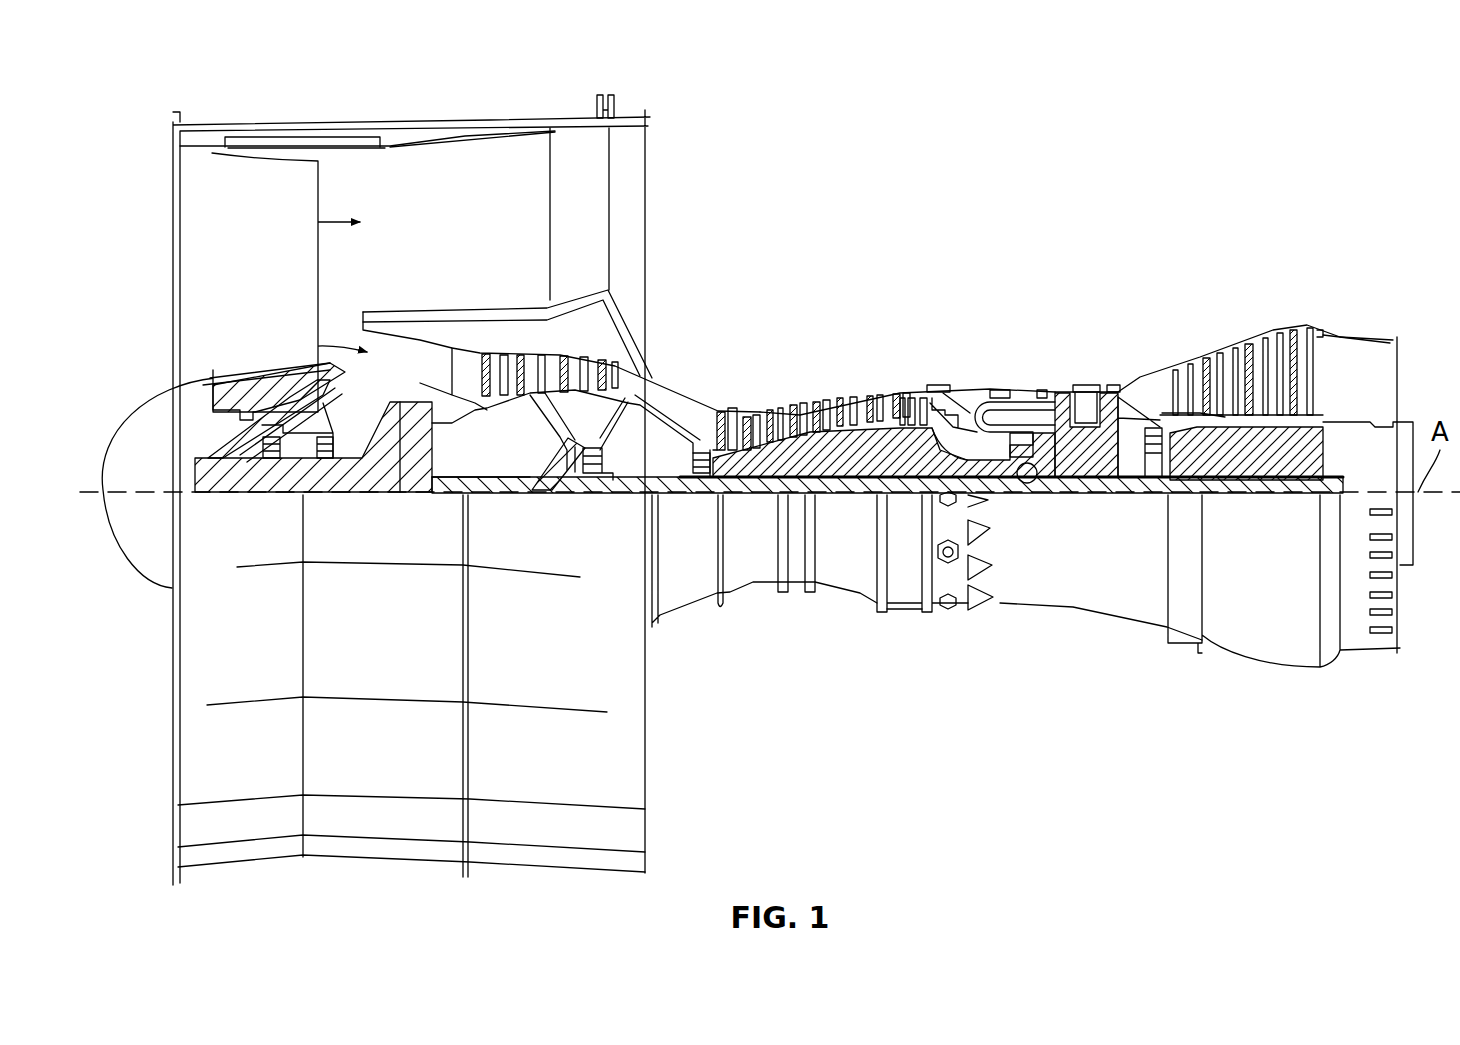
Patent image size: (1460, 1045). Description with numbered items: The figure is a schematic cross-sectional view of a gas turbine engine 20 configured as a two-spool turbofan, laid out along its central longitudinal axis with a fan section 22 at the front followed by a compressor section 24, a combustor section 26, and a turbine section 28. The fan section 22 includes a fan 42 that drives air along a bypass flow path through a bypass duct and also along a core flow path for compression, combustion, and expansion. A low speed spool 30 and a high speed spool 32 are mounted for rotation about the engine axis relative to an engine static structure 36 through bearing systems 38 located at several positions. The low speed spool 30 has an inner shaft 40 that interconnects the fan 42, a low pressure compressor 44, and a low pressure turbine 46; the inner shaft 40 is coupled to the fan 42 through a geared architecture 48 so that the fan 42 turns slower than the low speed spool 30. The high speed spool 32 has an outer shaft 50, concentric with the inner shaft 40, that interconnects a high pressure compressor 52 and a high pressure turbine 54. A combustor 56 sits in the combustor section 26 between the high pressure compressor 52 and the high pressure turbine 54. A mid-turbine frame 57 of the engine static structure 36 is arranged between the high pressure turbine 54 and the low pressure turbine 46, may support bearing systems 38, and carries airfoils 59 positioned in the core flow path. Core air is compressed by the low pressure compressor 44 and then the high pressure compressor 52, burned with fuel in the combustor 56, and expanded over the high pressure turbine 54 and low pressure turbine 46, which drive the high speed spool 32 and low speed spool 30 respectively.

The gas turbine engine 20 is at (1225, 160).
The fan section 22 is at (255, 95).
The compressor section 24 is at (717, 370).
The combustor section 26 is at (1002, 350).
The turbine section 28 is at (1127, 305).
The low speed spool 30 is at (870, 495).
The high speed spool 32 is at (920, 433).
The engine static structure 36 is at (908, 612).
The bearing systems 38 is at (593, 453).
The inner shaft 40 is at (660, 487).
The fan 42 is at (284, 270).
The low pressure compressor 44 is at (558, 372).
The low pressure turbine 46 is at (1253, 350).
The geared architecture 48 is at (415, 458).
The outer shaft 50 is at (1030, 470).
The high pressure compressor 52 is at (817, 410).
The high pressure turbine 54 is at (1093, 385).
The combustor 56 is at (413, 128).
The mid-turbine frame 57 is at (1137, 377).
The airfoils 59 is at (1162, 413).